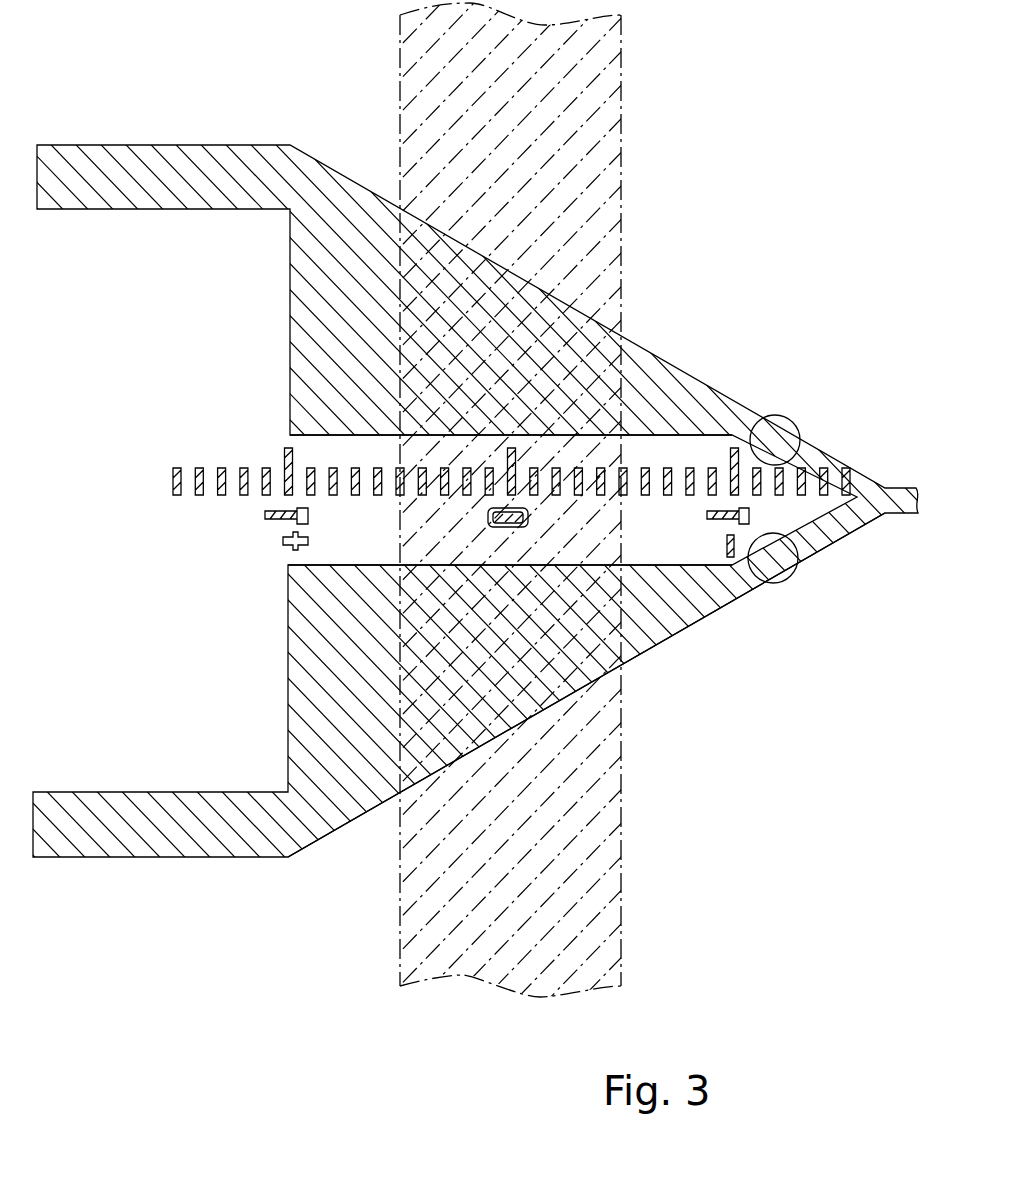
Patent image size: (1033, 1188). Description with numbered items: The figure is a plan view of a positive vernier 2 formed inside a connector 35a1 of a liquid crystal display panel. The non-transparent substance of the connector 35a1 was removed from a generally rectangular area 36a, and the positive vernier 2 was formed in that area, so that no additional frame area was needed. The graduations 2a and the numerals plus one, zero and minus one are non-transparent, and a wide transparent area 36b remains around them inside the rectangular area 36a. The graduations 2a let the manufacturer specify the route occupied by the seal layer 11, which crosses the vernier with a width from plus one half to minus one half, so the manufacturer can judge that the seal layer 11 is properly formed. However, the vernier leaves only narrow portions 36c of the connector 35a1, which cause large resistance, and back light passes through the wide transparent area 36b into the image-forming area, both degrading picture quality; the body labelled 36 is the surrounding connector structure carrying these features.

The nozzle body 36 is at (136, 162).
The generally rectangular area 36a is at (330, 452).
The wide transparent area 36b is at (390, 545).
The narrow portions 36c is at (778, 418).
The connector 35a1 is at (643, 634).
The seal layer 11 is at (612, 167).
The positive vernier 2 is at (246, 537).
The graduations 2a is at (172, 482).